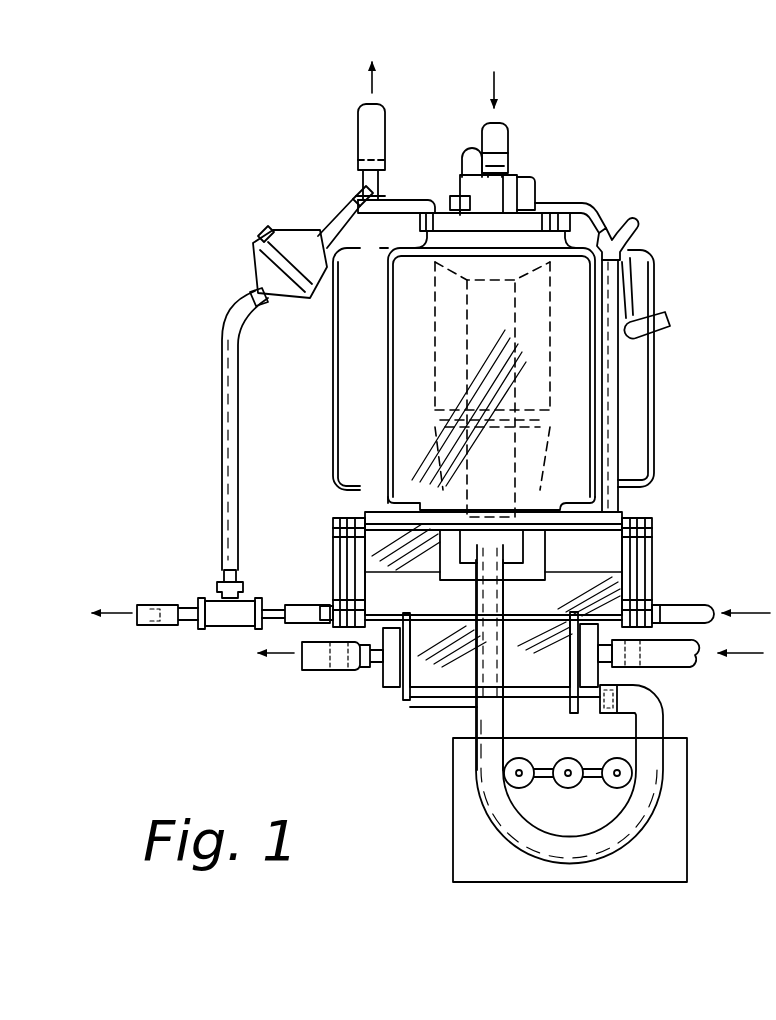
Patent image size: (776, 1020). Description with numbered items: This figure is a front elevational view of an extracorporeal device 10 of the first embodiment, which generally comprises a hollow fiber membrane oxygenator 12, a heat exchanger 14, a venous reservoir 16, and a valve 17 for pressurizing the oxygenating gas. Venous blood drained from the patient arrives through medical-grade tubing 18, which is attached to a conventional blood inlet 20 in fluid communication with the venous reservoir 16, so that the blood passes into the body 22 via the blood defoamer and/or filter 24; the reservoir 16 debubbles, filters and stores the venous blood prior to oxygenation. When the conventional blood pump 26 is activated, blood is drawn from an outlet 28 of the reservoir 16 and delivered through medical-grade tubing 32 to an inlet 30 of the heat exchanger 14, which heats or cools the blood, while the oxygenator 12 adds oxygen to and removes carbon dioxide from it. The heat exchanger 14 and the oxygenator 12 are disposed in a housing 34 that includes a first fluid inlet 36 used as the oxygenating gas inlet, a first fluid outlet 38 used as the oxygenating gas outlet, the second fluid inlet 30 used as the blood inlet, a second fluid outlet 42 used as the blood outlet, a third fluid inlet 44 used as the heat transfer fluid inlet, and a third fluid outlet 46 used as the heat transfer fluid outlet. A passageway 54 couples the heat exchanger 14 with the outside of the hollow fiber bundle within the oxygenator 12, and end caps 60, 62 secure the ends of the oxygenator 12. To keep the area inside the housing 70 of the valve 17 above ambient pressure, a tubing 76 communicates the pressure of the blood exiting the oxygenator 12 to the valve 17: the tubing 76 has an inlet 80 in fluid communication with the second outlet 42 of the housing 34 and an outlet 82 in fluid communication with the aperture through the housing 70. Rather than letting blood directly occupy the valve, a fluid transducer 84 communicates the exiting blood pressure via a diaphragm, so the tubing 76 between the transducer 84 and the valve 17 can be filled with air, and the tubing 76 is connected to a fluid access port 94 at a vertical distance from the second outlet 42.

The extracorporeal device 10 is at (630, 166).
The hollow fiber membrane oxygenator 12 is at (660, 533).
The heat exchanger 14 is at (396, 696).
The venous reservoir 16 is at (597, 303).
The valve 17 is at (217, 632).
The medical-grade tubing 18 is at (482, 135).
The blood inlet 20 is at (504, 166).
The body 22 is at (580, 450).
The blood defoamer and/or filter 24 is at (435, 322).
The blood pump 26 is at (688, 823).
The outlet 28 is at (500, 533).
The inlet 30 is at (600, 708).
The medical-grade tubing 32 is at (662, 725).
The housing 34 is at (337, 540).
The first fluid inlet 36 is at (652, 605).
The first fluid outlet 38 is at (330, 606).
The second fluid outlet 42 is at (357, 510).
The third fluid inlet 44 is at (613, 670).
The third fluid outlet 46 is at (380, 667).
The passageway 54 is at (572, 642).
The end cap 60 is at (650, 560).
The end cap 62 is at (432, 630).
The housing 70 is at (217, 596).
The tubing 76 is at (332, 213).
The inlet 80 is at (368, 190).
The outlet 82 is at (220, 565).
The fluid transducer 84 is at (257, 225).
The fluid access port 94 is at (390, 152).